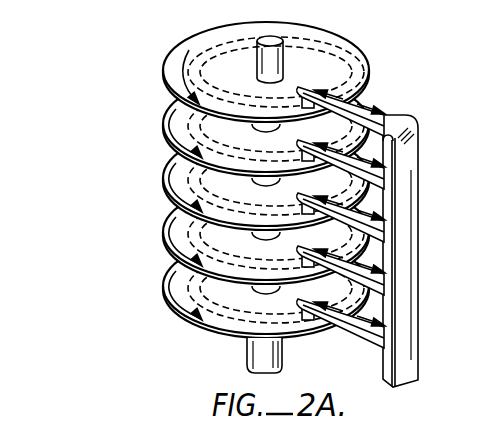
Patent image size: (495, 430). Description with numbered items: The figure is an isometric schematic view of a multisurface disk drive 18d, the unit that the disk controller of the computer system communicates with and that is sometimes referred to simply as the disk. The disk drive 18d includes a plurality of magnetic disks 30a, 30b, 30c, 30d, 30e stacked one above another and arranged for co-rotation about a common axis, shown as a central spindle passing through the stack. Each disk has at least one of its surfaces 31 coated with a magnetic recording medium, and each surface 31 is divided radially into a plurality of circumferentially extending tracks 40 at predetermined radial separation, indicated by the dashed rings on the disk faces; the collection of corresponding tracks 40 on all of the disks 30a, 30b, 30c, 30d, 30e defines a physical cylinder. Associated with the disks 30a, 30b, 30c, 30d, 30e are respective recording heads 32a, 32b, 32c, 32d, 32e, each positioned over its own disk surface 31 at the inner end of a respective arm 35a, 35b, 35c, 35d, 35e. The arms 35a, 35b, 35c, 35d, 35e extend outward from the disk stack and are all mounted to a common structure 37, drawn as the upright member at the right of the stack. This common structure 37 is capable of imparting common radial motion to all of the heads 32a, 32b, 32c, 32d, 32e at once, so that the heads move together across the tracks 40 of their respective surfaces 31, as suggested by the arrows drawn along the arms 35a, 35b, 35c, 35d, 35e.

The disk drive 18d is at (100, 106).
The magnetic disk 30a is at (165, 68).
The magnetic disk 30b is at (165, 121).
The magnetic disk 30c is at (165, 175).
The magnetic disk 30d is at (165, 225).
The magnetic disk 30e is at (163, 281).
The disk surface 31 is at (236, 80).
The recording head 32a is at (300, 97).
The recording head 32b is at (300, 161).
The recording head 32c is at (300, 210).
The recording head 32d is at (303, 260).
The recording head 32e is at (300, 319).
The arm 35a is at (389, 112).
The arm 35b is at (373, 166).
The arm 35c is at (378, 214).
The arm 35d is at (373, 273).
The arm 35e is at (373, 322).
The common structure 37 is at (410, 250).
The track 40 is at (372, 58).